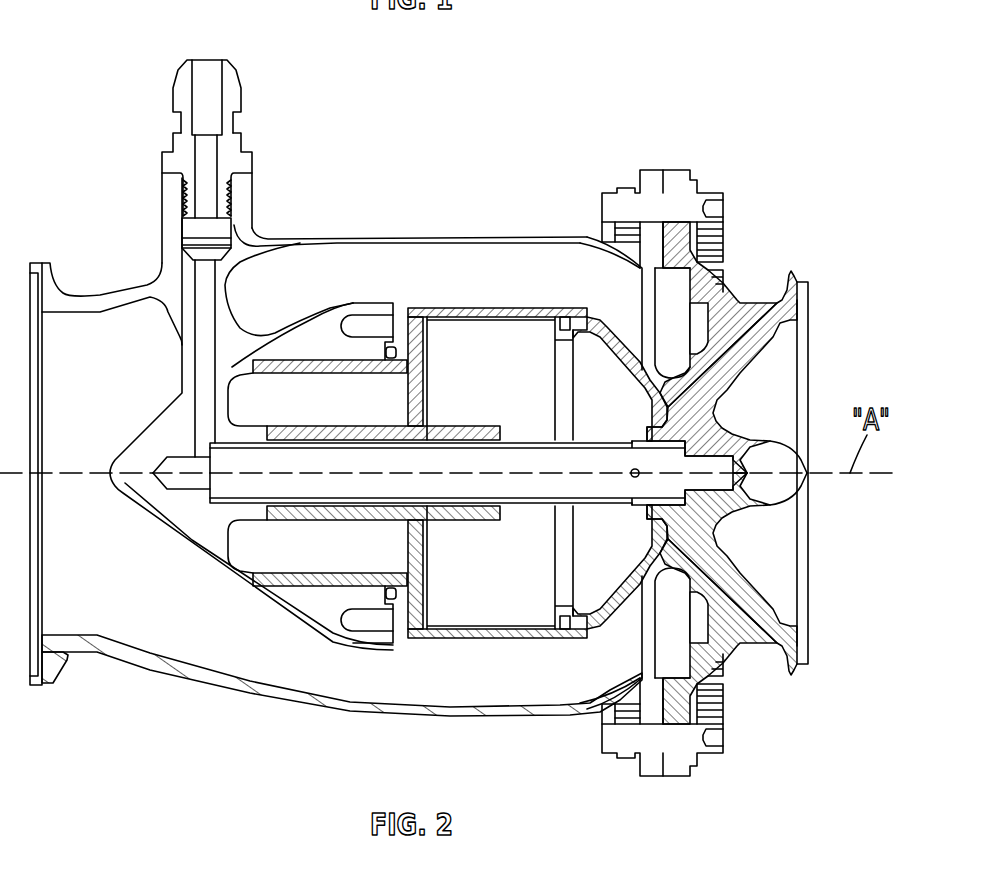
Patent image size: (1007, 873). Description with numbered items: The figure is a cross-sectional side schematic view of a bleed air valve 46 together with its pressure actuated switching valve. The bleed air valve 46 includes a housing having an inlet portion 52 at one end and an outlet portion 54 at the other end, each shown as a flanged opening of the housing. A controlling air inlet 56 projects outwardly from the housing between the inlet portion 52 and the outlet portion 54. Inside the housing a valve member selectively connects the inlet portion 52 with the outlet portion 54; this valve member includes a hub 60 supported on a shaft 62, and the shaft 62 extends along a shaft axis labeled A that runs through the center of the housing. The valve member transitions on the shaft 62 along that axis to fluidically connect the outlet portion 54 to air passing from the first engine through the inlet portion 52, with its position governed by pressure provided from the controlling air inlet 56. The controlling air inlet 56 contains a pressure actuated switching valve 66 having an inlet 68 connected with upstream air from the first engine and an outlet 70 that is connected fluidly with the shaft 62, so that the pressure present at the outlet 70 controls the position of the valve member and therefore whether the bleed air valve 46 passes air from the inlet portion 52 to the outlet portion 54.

The bleed air valve 46 is at (130, 40).
The inlet portion 52 is at (63, 635).
The outlet portion 54 is at (770, 622).
The controlling air inlet 56 is at (145, 103).
The hub 60 is at (330, 531).
The shaft 62 is at (530, 500).
The pressure actuated switching valve 66 is at (241, 160).
The inlet 68 is at (207, 60).
The outlet 70 is at (207, 180).